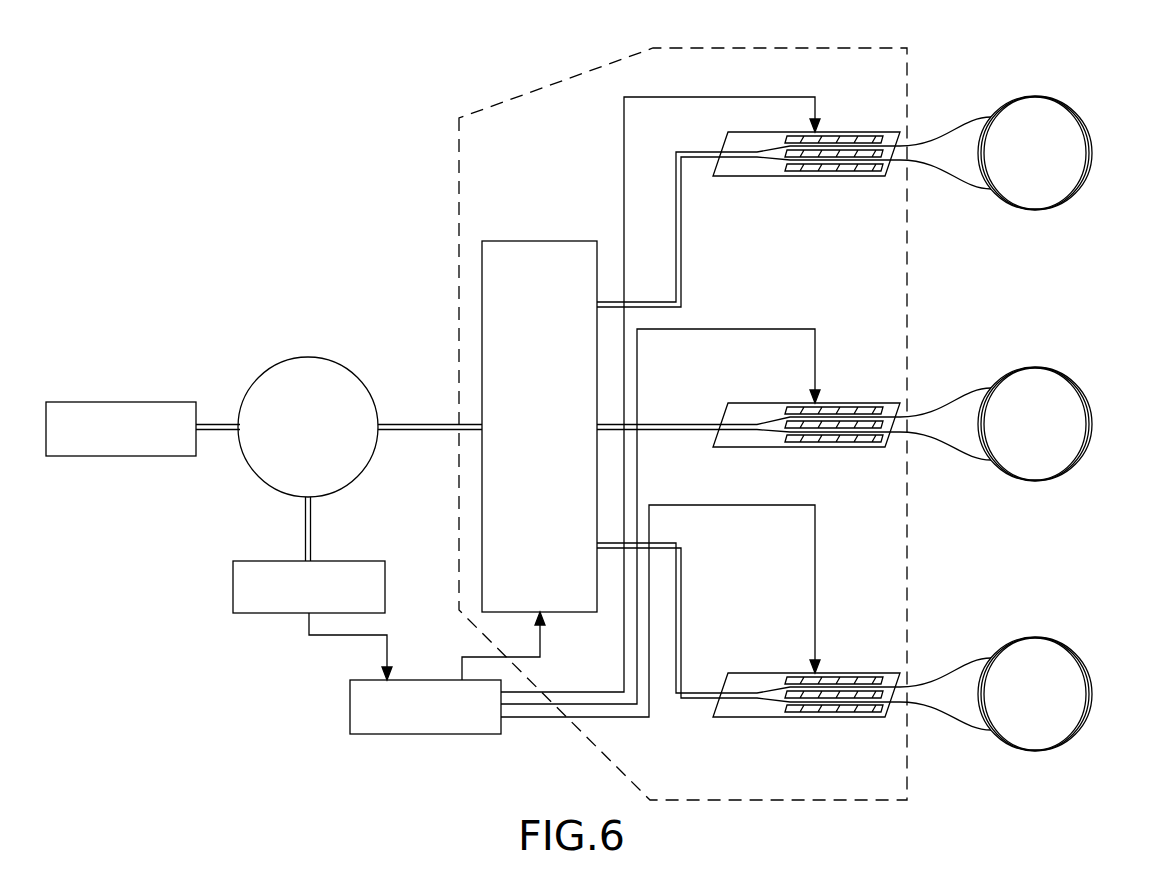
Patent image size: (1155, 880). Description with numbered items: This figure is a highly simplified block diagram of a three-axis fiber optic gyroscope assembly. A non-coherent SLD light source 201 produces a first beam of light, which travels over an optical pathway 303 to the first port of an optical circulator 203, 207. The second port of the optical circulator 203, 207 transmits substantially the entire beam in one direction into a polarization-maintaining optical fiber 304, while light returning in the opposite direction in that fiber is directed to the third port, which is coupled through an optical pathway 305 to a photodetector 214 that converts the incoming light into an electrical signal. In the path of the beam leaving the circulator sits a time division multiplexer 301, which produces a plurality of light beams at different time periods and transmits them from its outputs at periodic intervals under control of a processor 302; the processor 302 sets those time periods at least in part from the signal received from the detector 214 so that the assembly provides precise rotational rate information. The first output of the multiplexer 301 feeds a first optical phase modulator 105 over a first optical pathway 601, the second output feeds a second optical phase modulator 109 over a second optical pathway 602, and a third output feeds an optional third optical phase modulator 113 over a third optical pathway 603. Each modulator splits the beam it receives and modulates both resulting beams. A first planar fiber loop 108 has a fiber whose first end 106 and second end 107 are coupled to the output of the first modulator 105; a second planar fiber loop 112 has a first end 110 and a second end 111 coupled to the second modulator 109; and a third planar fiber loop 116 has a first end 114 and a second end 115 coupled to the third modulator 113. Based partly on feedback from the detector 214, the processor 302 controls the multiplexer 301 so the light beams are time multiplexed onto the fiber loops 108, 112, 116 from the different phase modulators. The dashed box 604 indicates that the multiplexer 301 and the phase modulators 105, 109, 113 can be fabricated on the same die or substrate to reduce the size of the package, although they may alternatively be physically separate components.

The SLD light source 201 is at (120, 402).
The optical circulator 203 is at (308, 379).
The optical circulator 207 is at (308, 357).
The photodetector 214 is at (233, 588).
The time division multiplexer 301 is at (540, 241).
The processor 302 is at (350, 705).
The optical pathway 303 is at (217, 432).
The polarization-maintaining optical fiber 304 is at (428, 424).
The optical pathway 305 is at (312, 527).
The first optical pathway 601 is at (681, 232).
The second optical pathway 602 is at (672, 424).
The third optical pathway 603 is at (683, 618).
The dashed box 604 is at (535, 90).
The first optical phase modulator 105 is at (868, 132).
The first end 106 is at (970, 133).
The second end 107 is at (943, 165).
The first planar fiber loop 108 is at (1072, 108).
The second optical phase modulator 109 is at (845, 403).
The first end 110 is at (970, 405).
The second end 111 is at (943, 440).
The second planar fiber loop 112 is at (1072, 383).
The third optical phase modulator 113 is at (845, 673).
The first end 114 is at (970, 675).
The second end 115 is at (950, 707).
The third planar fiber loop 116 is at (1070, 648).